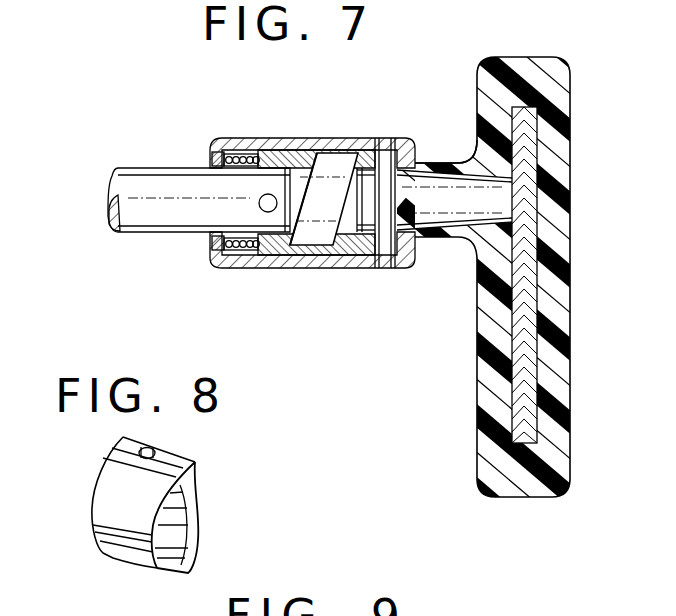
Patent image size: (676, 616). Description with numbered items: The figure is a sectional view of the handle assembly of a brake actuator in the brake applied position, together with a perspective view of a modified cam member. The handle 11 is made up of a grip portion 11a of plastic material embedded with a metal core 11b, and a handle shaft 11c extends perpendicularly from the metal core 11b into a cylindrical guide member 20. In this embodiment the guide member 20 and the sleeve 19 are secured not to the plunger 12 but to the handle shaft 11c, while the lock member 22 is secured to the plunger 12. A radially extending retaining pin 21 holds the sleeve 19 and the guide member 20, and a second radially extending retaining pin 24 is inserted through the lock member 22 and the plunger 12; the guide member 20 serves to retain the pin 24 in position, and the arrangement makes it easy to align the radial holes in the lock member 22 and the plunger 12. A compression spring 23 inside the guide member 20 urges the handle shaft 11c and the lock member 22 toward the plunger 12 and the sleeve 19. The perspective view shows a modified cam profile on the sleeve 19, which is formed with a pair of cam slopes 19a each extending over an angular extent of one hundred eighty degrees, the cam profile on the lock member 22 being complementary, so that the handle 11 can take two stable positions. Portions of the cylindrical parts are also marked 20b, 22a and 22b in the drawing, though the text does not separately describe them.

In FIG. 7, the handle 11 is at (573, 152).
In FIG. 7, the grip portion 11a is at (552, 377).
In FIG. 7, the metal core 11b is at (527, 393).
In FIG. 7, the handle shaft 11c is at (411, 152).
In FIG. 7, the plunger 12 is at (141, 167).
In FIG. 7, the sleeve 19 is at (352, 253).
In FIG. 8, the sleeve 19 is at (103, 505).
In FIG. 7, the cam slopes 19a is at (332, 242).
In FIG. 8, the cam slopes 19a is at (200, 526).
In FIG. 7, the guide member 20 is at (268, 269).
In FIG. 7, the lower spring row 20b is at (218, 240).
In FIG. 7, the retaining pin 21 is at (385, 253).
In FIG. 7, the lock member 22 is at (296, 158).
In FIG. 7, the upper bushing 22a is at (334, 157).
In FIG. 7, the upper spring row 22b is at (222, 161).
In FIG. 7, the compression spring 23 is at (240, 268).
In FIG. 7, the retaining pin 24 is at (268, 194).